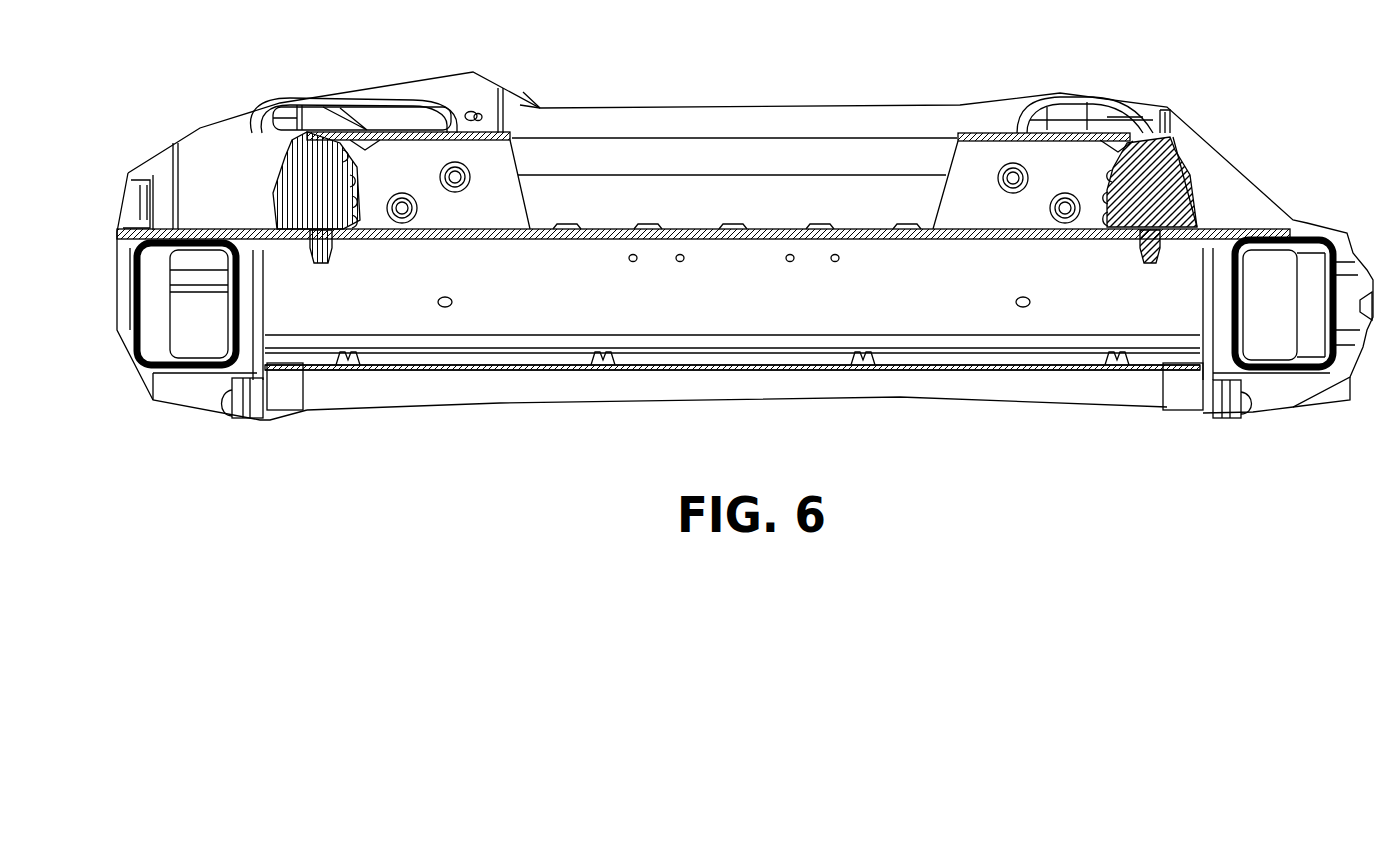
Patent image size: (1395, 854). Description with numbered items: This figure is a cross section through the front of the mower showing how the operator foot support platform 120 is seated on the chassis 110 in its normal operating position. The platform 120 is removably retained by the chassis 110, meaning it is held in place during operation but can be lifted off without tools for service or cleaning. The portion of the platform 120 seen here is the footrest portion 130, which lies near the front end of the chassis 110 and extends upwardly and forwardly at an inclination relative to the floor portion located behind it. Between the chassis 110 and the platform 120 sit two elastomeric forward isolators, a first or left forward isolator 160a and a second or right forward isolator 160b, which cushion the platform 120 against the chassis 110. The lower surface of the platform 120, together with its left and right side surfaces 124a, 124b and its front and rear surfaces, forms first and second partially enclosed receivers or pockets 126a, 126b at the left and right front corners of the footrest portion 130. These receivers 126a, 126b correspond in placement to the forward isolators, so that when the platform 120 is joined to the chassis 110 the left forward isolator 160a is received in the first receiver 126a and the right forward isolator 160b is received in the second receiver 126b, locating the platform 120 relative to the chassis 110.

The chassis 110 is at (473, 232).
The operator foot support platform 120 is at (493, 128).
The footrest portion 130 is at (977, 133).
The left side surface 124a is at (1190, 173).
The right side surface 124b is at (322, 132).
The first receiver 126a is at (1116, 151).
The second receiver 126b is at (358, 152).
The first forward isolator 160a is at (1127, 150).
The second forward isolator 160b is at (297, 158).